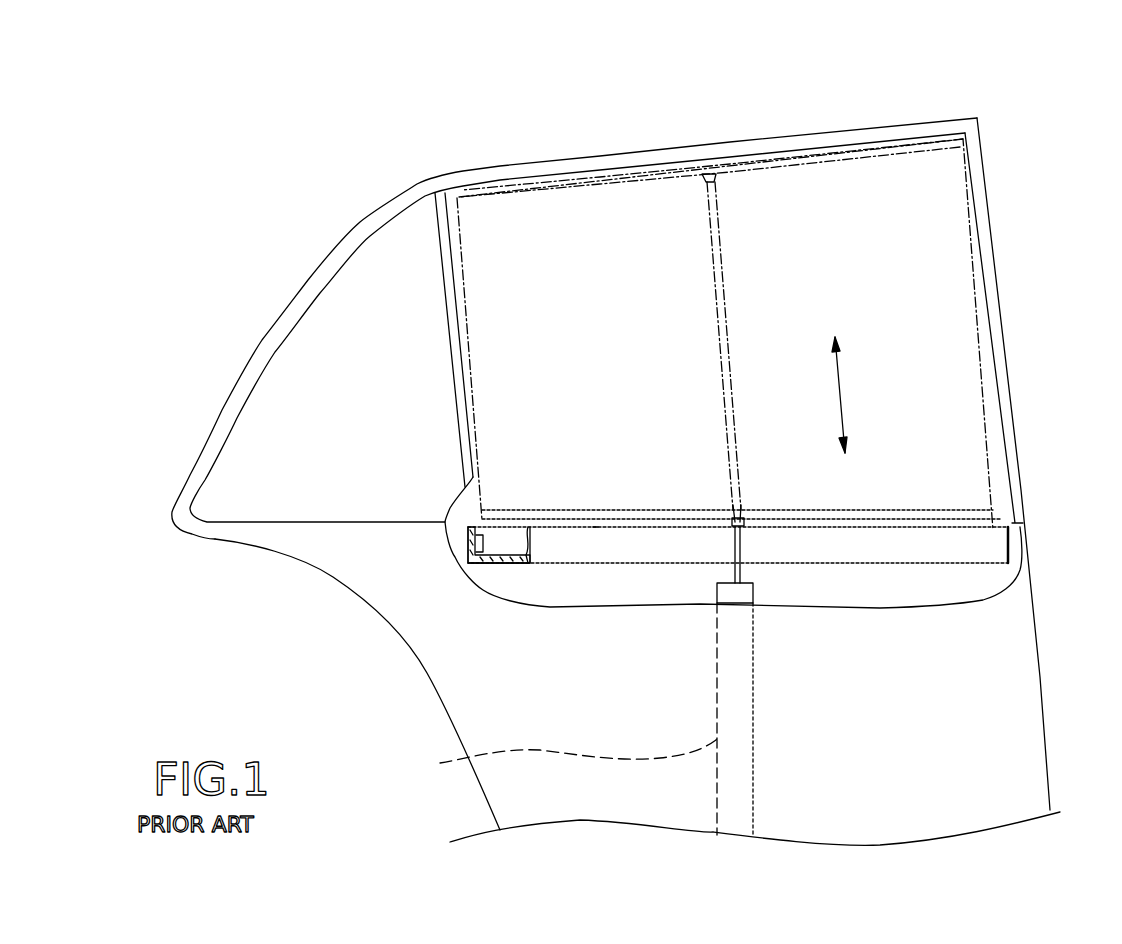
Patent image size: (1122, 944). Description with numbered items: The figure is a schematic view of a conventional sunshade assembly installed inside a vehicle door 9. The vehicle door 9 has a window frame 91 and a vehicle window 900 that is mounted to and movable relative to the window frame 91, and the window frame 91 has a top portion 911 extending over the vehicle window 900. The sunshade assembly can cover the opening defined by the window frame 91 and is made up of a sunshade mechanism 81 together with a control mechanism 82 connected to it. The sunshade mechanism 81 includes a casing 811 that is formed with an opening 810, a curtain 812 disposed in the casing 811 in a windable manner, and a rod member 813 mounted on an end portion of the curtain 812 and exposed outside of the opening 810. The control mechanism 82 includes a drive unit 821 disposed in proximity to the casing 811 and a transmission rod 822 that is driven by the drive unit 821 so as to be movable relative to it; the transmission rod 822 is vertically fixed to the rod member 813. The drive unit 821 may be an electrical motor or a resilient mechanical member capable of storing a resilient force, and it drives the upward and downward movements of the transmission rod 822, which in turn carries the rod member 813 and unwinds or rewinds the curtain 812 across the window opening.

The vehicle door 9 is at (255, 245).
The window frame 91 is at (405, 186).
The top portion 911 is at (673, 150).
The vehicle window 900 is at (985, 366).
The curtain 812 is at (958, 272).
The rod member 813 is at (863, 153).
The transmission rod 822 is at (727, 267).
The control mechanism 82 is at (760, 593).
The opening 810 is at (590, 528).
The sunshade mechanism 81 is at (458, 548).
The casing 811 is at (499, 562).
The drive unit 821 is at (558, 759).